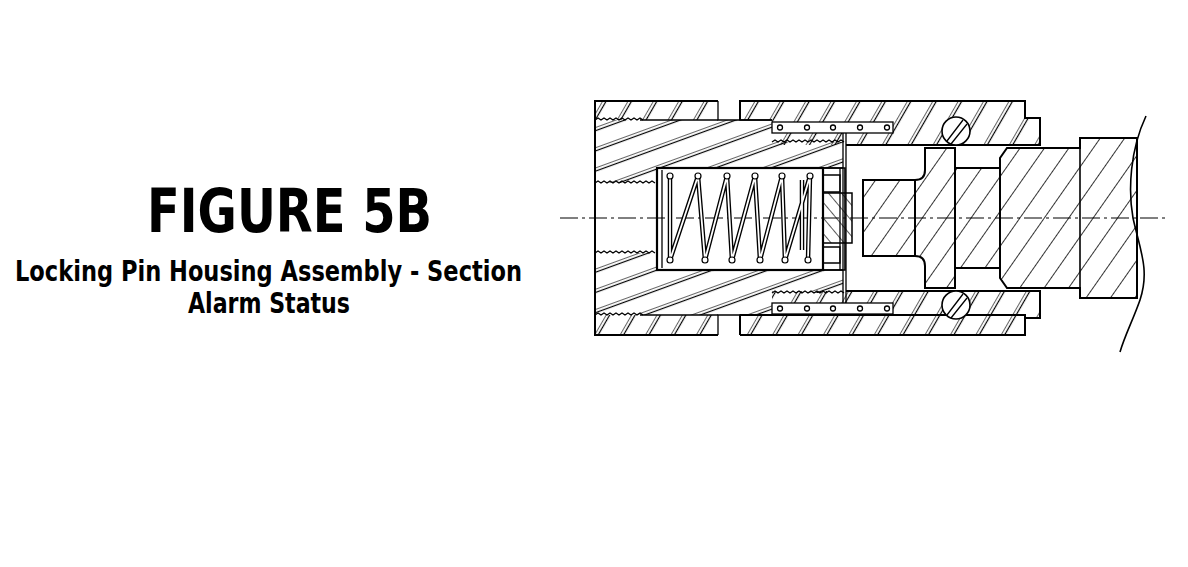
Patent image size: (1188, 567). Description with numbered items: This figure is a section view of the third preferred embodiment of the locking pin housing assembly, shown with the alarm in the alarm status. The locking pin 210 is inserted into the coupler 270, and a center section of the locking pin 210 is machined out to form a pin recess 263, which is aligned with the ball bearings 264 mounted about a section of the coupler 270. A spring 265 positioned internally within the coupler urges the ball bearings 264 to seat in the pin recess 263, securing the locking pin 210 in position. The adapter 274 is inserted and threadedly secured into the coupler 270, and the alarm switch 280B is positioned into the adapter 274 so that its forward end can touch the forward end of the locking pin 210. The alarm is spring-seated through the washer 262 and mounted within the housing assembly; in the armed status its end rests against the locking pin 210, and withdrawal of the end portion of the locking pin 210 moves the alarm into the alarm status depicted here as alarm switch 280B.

The adapter 274 is at (670, 145).
The spring 265 is at (868, 120).
The coupler 270 is at (980, 122).
The alarm switch 280B is at (773, 247).
The washer 262 is at (830, 262).
The ball bearing 264 is at (957, 316).
The pin recess 263 is at (989, 282).
The locking pin 210 is at (1004, 287).